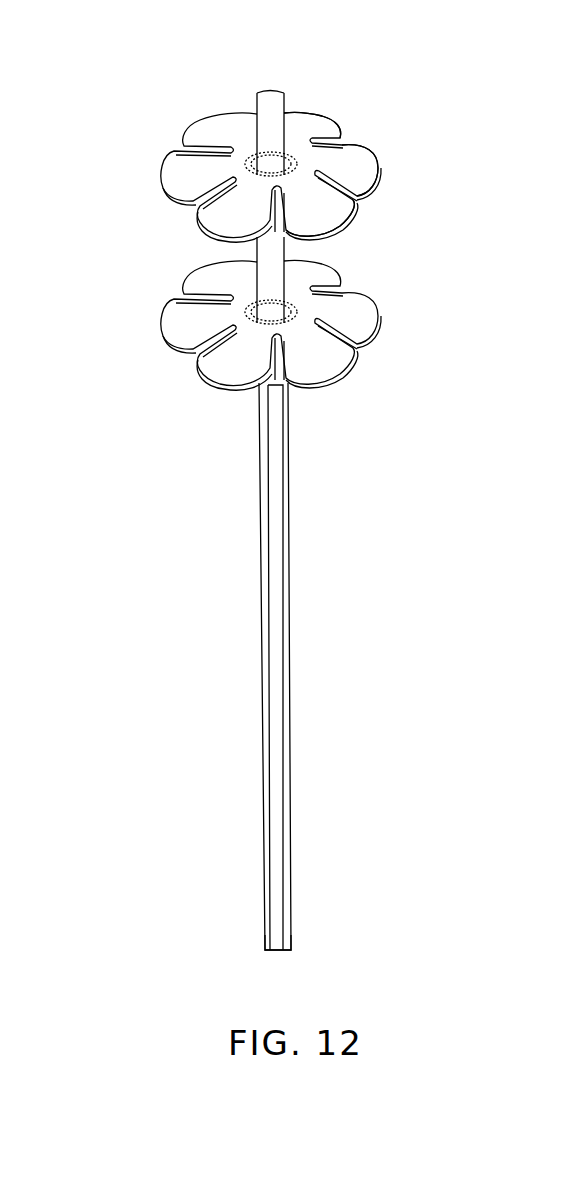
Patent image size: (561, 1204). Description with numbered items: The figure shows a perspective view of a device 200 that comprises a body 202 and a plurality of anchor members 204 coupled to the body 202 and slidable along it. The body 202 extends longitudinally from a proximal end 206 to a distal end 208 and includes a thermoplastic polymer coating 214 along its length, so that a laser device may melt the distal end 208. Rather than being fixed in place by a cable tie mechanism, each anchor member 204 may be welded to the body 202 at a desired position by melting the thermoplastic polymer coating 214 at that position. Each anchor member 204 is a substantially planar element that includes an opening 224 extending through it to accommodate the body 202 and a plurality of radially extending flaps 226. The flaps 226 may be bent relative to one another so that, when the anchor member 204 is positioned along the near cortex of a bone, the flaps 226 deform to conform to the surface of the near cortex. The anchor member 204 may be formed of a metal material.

The device 200 is at (123, 77).
The body 202 is at (272, 666).
The anchor member 204 is at (251, 224).
The proximal end 206 is at (258, 117).
The distal end 208 is at (265, 933).
The thermoplastic polymer coating 214 is at (282, 613).
The opening 224 is at (250, 150).
The flaps 226 is at (323, 127).